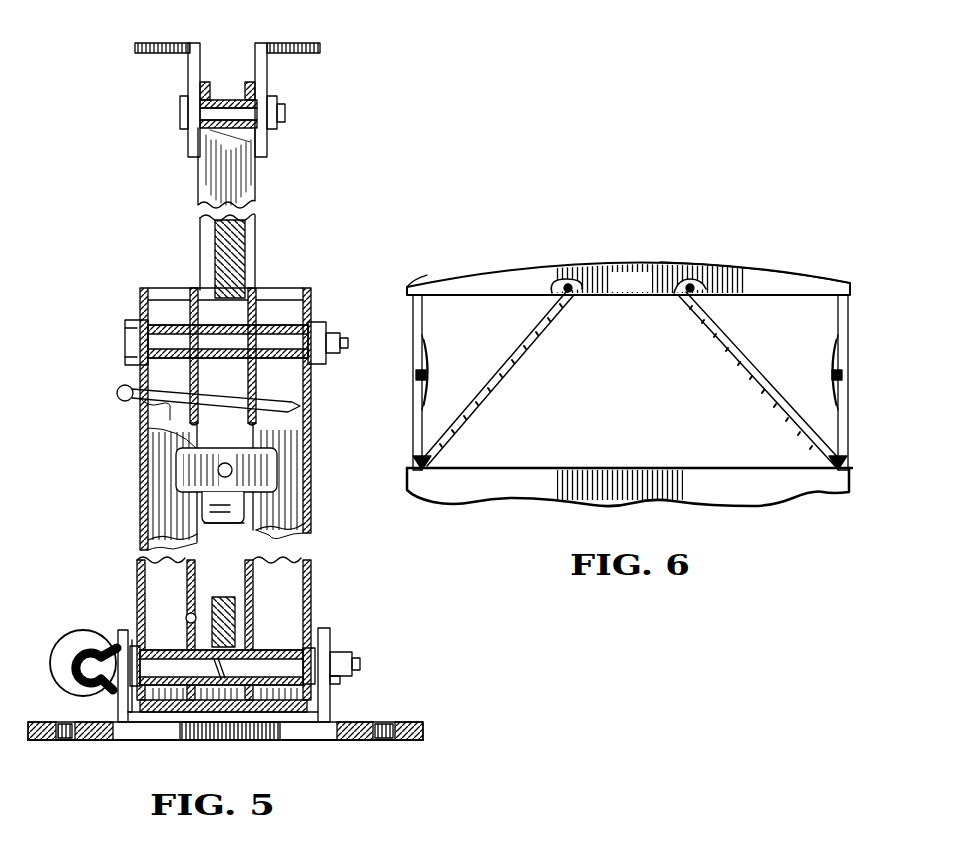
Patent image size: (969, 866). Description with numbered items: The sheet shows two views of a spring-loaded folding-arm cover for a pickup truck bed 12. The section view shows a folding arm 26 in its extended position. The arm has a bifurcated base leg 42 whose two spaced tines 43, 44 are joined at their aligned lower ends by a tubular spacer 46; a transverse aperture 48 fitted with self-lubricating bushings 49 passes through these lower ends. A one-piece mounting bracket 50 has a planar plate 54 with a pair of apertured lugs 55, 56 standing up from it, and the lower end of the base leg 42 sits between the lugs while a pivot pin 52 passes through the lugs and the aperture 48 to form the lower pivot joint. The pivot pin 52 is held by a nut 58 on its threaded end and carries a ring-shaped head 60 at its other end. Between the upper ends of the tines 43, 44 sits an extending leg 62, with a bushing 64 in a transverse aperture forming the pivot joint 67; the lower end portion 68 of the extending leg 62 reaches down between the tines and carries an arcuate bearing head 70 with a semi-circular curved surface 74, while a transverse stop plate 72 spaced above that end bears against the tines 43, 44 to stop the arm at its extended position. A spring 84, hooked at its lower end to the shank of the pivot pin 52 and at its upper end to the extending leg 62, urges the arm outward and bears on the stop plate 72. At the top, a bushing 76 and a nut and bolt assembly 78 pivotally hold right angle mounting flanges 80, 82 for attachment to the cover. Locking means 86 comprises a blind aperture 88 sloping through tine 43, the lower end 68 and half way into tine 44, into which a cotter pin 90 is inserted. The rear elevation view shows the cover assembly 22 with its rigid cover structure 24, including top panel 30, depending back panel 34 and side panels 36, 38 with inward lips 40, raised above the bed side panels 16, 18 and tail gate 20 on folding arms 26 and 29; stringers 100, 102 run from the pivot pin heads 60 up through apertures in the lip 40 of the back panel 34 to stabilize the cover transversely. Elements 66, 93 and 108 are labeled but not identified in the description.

In FIG. 6, the bed 12 is at (698, 506).
In FIG. 6, the side panel 16 is at (408, 498).
In FIG. 6, the side panel 18 is at (842, 492).
In FIG. 6, the tail gate 20 is at (537, 500).
In FIG. 6, the cover assembly 22 is at (402, 320).
In FIG. 6, the rigid cover structure 24 is at (764, 252).
In FIG. 6, the folding arm 26 is at (406, 381).
In FIG. 6, the folding arm 29 is at (822, 386).
In FIG. 6, the top panel 30 is at (684, 268).
In FIG. 6, the back panel 34 is at (498, 280).
In FIG. 6, the side panel 36 is at (404, 280).
In FIG. 6, the side panel 38 is at (844, 282).
In FIG. 6, the lip 40 is at (576, 294).
In FIG. 5, the bifurcated base leg 42 is at (318, 510).
In FIG. 5, the tine 43 is at (150, 496).
In FIG. 5, the tine 44 is at (292, 501).
In FIG. 5, the tubular spacer 46 is at (216, 716).
In FIG. 5, the transverse aperture 48 is at (310, 628).
In FIG. 5, the bushings 49 is at (164, 638).
In FIG. 5, the mounting bracket 50 is at (400, 720).
In FIG. 5, the pivot pin 52 is at (340, 678).
In FIG. 5, the planar plate 54 is at (428, 736).
In FIG. 5, the lug 55 is at (124, 630).
In FIG. 5, the lug 56 is at (332, 652).
In FIG. 5, the nut 58 is at (348, 668).
In FIG. 5, the ring-shaped head 60 is at (82, 628).
In FIG. 6, the ring-shaped head 60 is at (412, 470).
In FIG. 5, the extending leg 62 is at (258, 161).
In FIG. 5, the bushing 64 is at (288, 300).
In FIG. 5, the housing wall 66 is at (144, 288).
In FIG. 5, the pivot joint 67 is at (331, 306).
In FIG. 5, the lower end portion 68 is at (140, 454).
In FIG. 5, the arcuate bearing head 70 is at (228, 528).
In FIG. 5, the transverse stop plate 72 is at (277, 462).
In FIG. 5, the semi-circular curved surface 74 is at (243, 501).
In FIG. 5, the bushing 76 is at (238, 94).
In FIG. 5, the nut and bolt assembly 78 is at (285, 110).
In FIG. 5, the right angle mounting flange 80 is at (181, 42).
In FIG. 5, the right angle mounting flange 82 is at (315, 42).
In FIG. 5, the spring 84 is at (206, 286).
In FIG. 5, the locking means 86 is at (104, 385).
In FIG. 5, the blind aperture 88 is at (200, 416).
In FIG. 5, the cotter pin 90 is at (136, 411).
In FIG. 5, the fastener 93 is at (56, 723).
In FIG. 6, the stringer 100 is at (512, 342).
In FIG. 6, the stringer 102 is at (748, 358).
In FIG. 6, the top bar insert 108 is at (631, 282).